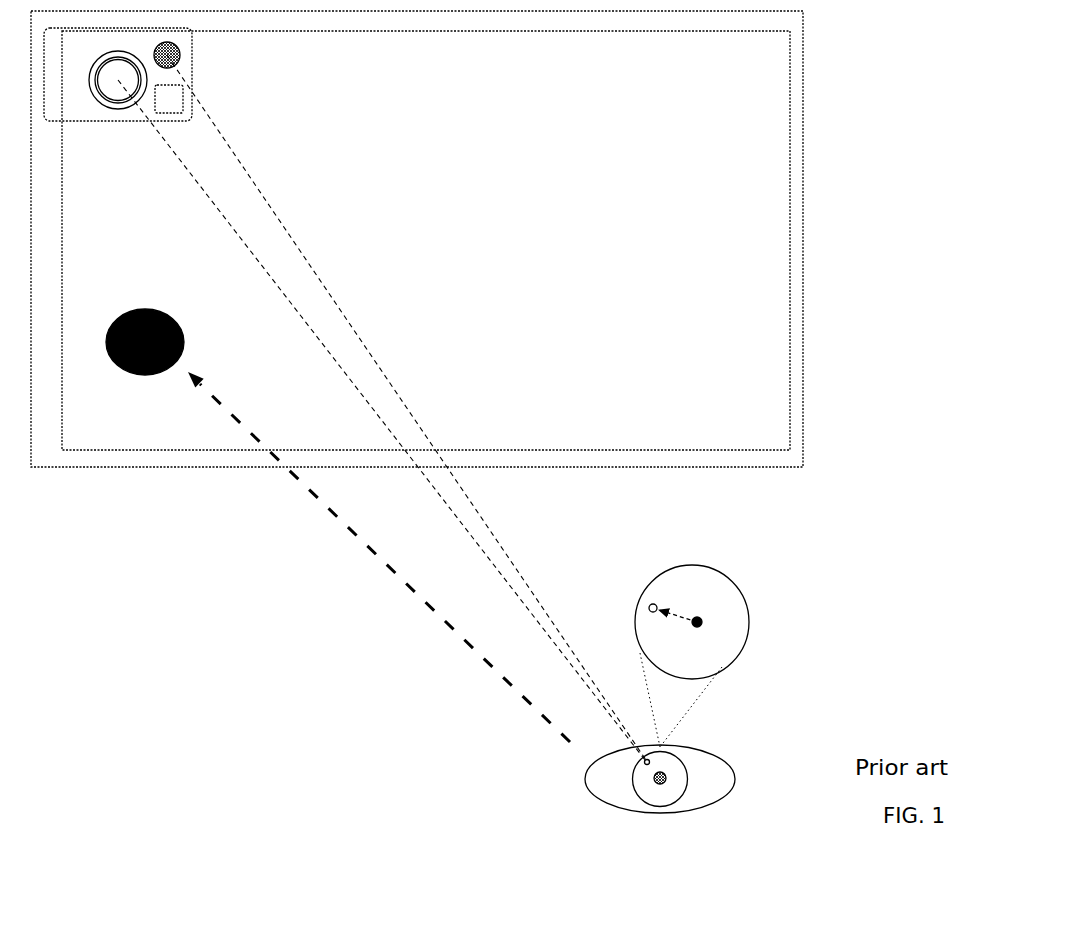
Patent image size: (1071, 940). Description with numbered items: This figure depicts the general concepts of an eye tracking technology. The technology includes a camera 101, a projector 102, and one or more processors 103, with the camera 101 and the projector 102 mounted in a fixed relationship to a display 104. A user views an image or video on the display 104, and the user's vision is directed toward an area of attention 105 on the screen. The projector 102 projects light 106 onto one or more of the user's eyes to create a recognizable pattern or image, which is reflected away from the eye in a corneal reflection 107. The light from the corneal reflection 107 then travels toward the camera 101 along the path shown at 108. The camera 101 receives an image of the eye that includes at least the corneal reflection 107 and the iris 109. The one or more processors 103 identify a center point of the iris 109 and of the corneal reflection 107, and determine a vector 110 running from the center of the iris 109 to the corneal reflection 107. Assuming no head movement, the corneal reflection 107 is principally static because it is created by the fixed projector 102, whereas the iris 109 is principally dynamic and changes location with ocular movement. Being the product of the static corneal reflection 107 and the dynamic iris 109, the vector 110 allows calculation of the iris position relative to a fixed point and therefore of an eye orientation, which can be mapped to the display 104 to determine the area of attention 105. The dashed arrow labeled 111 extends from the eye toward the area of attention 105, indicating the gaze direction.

The camera 101 is at (137, 126).
The projector 102 is at (186, 55).
The processors 103 is at (172, 98).
The display 104 is at (98, 453).
The area of attention 105 is at (123, 309).
The light 106 is at (292, 226).
The corneal reflection 107 is at (645, 769).
The light path from corneal reflection to camera 108 is at (293, 299).
The iris 109 is at (658, 789).
The vector 110 is at (683, 629).
The gaze direction 111 is at (398, 592).